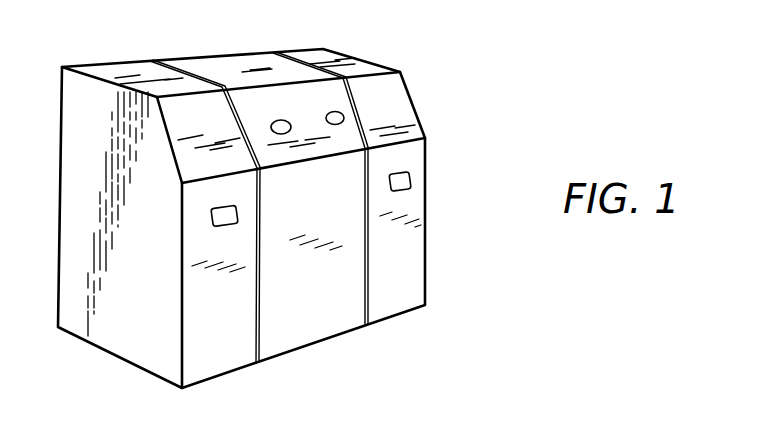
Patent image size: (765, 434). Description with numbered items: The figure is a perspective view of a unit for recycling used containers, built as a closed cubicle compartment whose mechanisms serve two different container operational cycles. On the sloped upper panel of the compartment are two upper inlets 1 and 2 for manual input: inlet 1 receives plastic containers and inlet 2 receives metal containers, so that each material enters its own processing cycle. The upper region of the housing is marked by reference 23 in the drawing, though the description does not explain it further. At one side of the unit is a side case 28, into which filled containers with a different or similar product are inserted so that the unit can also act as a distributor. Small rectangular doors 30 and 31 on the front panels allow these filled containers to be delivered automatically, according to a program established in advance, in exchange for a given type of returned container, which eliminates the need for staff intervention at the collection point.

The upper inlet 1 is at (280, 119).
The upper inlet 2 is at (337, 112).
The top surface 23 is at (135, 73).
The side case 28 is at (402, 122).
The door 30 is at (410, 181).
The door 31 is at (210, 221).